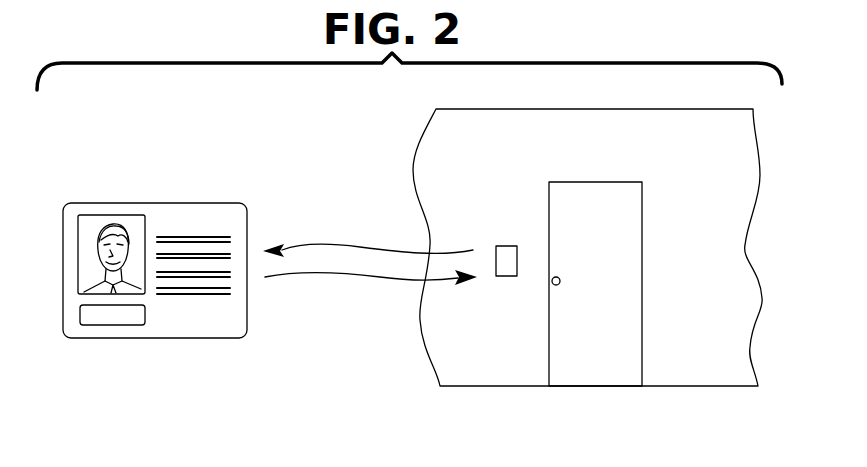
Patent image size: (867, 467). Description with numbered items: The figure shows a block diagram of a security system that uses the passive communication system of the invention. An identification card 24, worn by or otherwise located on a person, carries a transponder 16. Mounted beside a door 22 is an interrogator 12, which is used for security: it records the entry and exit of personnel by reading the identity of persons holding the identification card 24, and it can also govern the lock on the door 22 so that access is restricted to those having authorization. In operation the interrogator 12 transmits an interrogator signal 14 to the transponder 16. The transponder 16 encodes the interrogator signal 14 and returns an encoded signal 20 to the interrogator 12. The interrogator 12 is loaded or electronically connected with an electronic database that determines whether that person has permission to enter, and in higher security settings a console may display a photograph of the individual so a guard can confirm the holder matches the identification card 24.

The interrogator 12 is at (506, 246).
The interrogator signal 14 is at (363, 250).
The transponder 16 is at (118, 318).
The encoded signal 20 is at (372, 278).
The door 22 is at (620, 263).
The identification card 24 is at (200, 218).